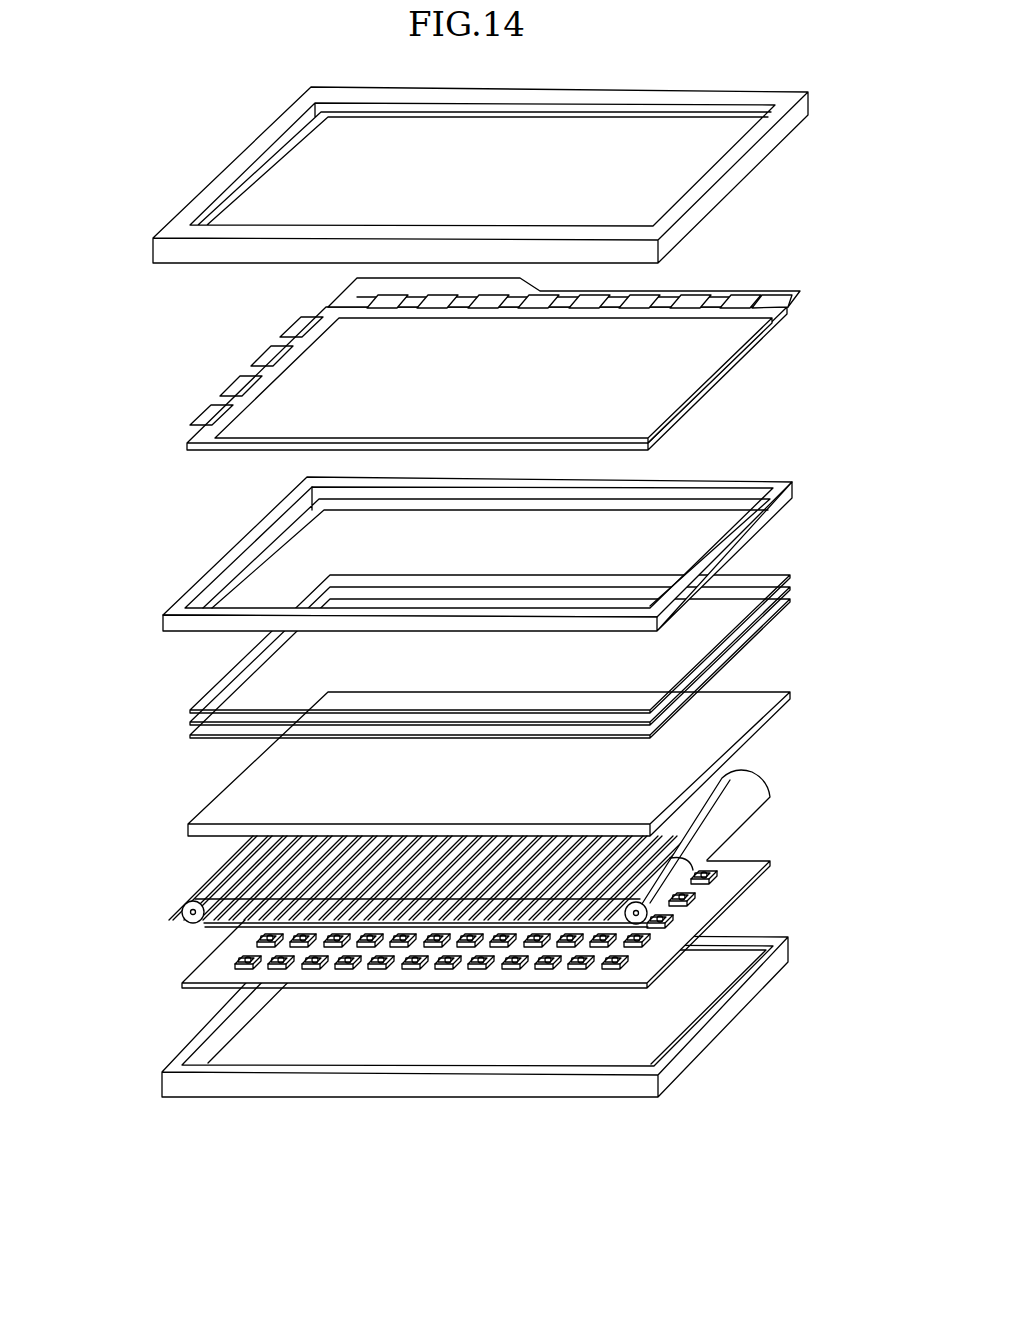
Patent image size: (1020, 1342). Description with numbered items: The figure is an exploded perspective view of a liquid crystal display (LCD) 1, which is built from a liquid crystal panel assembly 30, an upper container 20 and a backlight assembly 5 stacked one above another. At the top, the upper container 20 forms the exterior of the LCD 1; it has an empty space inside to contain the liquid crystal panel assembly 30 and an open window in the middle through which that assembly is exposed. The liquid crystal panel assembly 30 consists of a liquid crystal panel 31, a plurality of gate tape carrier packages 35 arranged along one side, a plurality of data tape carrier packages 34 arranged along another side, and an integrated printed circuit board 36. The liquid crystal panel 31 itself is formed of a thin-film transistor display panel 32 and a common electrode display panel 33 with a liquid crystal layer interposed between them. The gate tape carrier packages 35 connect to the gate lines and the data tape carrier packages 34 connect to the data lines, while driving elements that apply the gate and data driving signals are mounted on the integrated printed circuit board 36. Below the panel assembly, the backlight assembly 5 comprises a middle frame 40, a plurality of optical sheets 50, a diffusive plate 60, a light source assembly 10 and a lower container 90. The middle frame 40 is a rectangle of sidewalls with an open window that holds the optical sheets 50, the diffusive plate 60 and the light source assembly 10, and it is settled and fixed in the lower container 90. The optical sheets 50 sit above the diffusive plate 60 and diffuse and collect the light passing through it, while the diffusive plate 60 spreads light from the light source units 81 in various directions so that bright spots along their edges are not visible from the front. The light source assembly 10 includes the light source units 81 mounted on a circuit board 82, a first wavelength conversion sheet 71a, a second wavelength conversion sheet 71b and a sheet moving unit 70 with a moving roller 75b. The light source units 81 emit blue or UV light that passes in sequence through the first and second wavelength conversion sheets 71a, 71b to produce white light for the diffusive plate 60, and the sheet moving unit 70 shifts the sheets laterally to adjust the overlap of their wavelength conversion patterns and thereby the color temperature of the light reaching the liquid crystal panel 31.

The liquid crystal display 1 is at (455, 1167).
The backlight assembly 5 is at (472, 785).
The light source assembly 10 is at (407, 856).
The upper container 20 is at (812, 96).
The liquid crystal panel assembly 30 is at (538, 342).
The liquid crystal panel 31 is at (538, 372).
The thin-film transistor display panel 32 is at (780, 308).
The common electrode display panel 33 is at (519, 372).
The data tape carrier package 34 is at (702, 284).
The gate tape carrier package 35 is at (277, 353).
The integrated printed circuit board 36 is at (772, 296).
The middle frame 40 is at (793, 484).
The optical sheets 50 is at (797, 577).
The diffusive plate 60 is at (793, 692).
The sheet moving unit 70 is at (426, 856).
The first wavelength conversion sheet 71a is at (205, 926).
The second wavelength conversion sheet 71b is at (195, 900).
The moving roller 75b is at (182, 912).
The light source unit 81 is at (712, 870).
The circuit board 82 is at (738, 875).
The lower container 90 is at (793, 940).